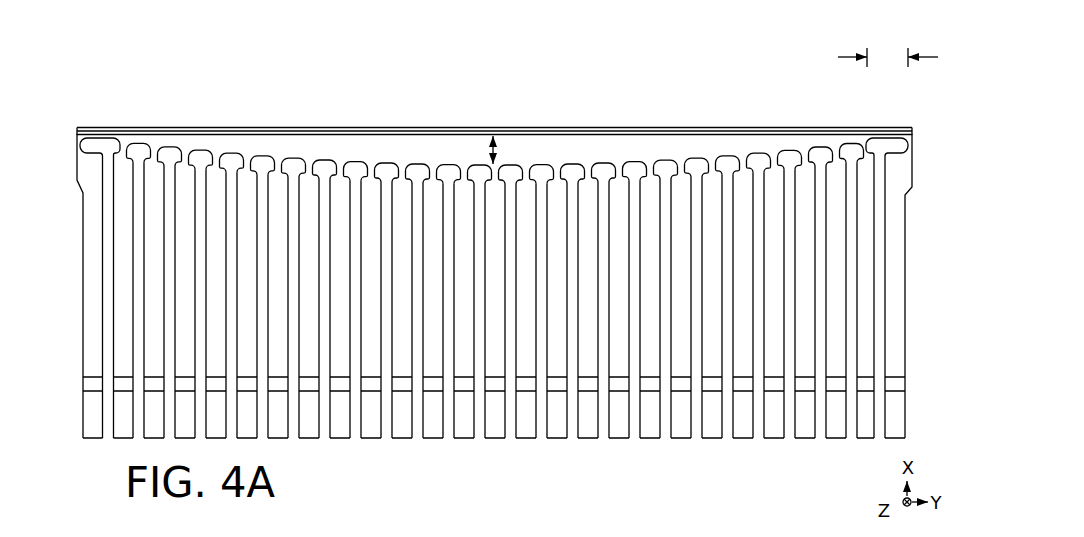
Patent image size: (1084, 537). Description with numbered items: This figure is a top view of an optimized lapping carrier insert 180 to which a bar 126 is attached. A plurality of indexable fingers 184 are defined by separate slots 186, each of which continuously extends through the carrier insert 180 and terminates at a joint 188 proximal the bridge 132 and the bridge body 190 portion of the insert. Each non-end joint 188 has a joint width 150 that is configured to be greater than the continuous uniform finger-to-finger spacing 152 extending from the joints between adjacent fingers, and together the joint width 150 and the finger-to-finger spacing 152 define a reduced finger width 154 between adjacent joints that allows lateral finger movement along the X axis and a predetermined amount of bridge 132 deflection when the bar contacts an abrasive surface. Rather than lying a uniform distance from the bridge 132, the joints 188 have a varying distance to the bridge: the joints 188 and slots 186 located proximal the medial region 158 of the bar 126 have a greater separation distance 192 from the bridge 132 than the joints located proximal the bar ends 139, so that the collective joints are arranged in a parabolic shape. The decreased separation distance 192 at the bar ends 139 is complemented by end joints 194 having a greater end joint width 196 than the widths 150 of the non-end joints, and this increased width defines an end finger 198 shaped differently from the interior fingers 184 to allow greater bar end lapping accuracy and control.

The carrier insert 180 is at (137, 32).
The bar 126 is at (198, 126).
The bridge 132 is at (916, 134).
The bar ends 139 is at (82, 123).
The joint width 150 is at (368, 113).
The finger-to-finger spacing 152 is at (381, 448).
The reduced finger width 154 is at (547, 448).
The medial region 158 is at (493, 126).
The indexable fingers 184 is at (681, 439).
The slots 186 is at (448, 445).
The joints 188 is at (291, 156).
The bridge body 190 is at (544, 157).
The separation distance 192 is at (472, 150).
The end joints 194 is at (114, 143).
The end joint width 196 is at (888, 47).
The end finger 198 is at (83, 262).